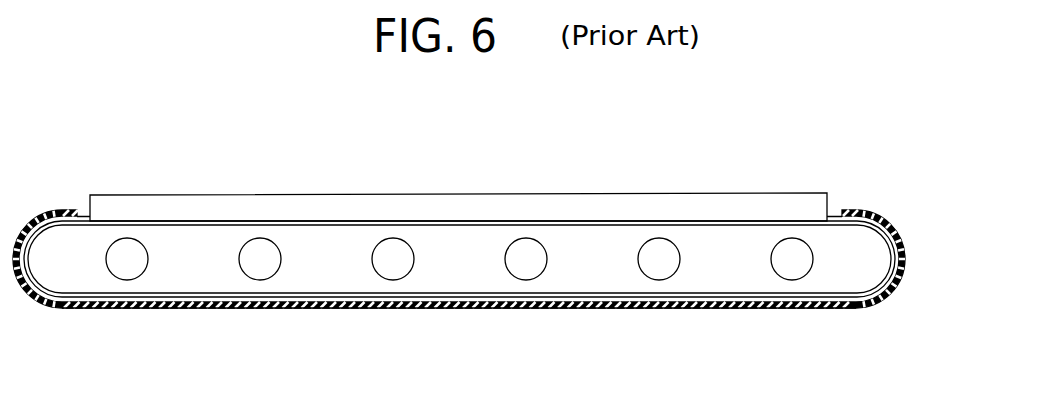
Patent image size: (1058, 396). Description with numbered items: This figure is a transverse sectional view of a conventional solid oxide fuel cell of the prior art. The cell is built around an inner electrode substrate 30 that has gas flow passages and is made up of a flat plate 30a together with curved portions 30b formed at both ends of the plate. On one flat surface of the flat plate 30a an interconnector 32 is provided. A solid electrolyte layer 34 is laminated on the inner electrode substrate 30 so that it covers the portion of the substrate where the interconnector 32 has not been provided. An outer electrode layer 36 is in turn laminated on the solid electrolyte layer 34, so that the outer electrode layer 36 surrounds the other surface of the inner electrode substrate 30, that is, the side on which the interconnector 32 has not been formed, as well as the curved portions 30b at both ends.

The inner electrode substrate 30 is at (208, 112).
The flat plate 30a is at (191, 250).
The curved portions 30b is at (50, 248).
The interconnector 32 is at (567, 203).
The solid electrolyte layer 34 is at (898, 232).
The outer electrode layer 36 is at (383, 308).